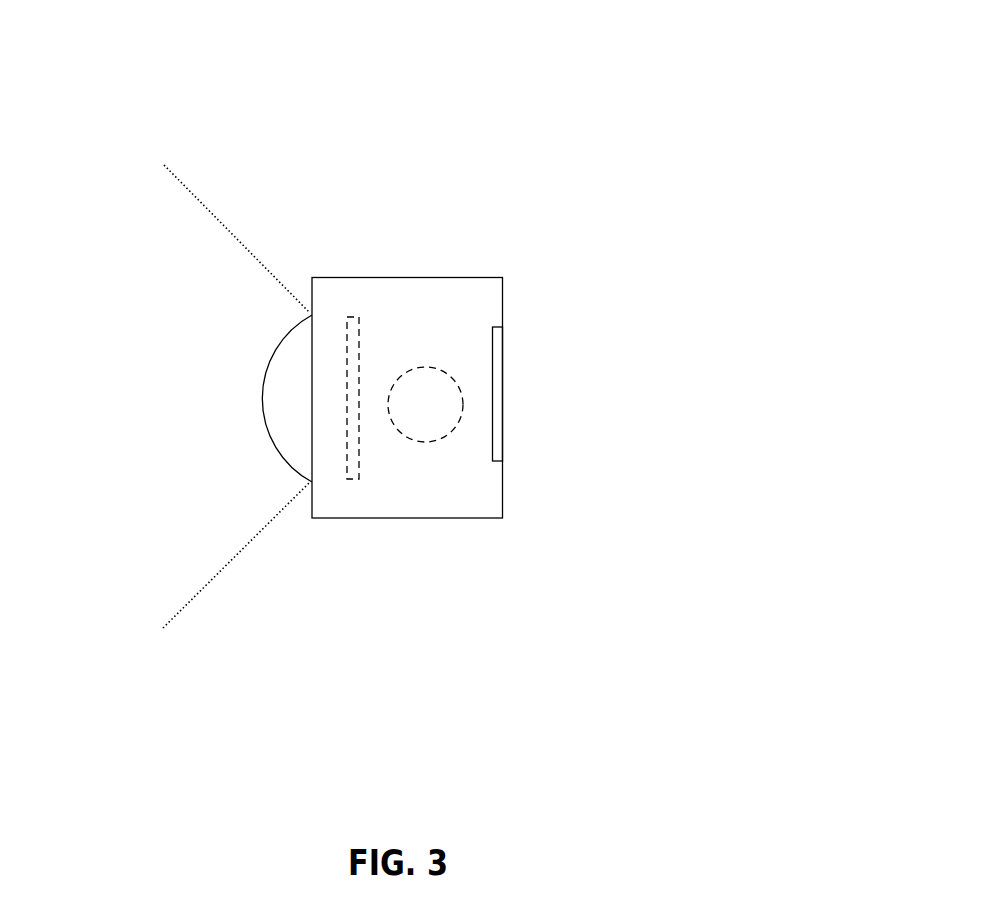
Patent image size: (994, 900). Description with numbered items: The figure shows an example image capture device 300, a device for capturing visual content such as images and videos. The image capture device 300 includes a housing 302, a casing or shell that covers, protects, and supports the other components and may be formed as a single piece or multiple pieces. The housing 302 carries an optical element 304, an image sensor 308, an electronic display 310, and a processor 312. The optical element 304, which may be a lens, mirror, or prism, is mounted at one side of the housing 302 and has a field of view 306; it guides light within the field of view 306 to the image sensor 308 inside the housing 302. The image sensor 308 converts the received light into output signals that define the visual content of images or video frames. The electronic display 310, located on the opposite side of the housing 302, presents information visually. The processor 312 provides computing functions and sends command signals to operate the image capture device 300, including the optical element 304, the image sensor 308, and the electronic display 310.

The image capture device 300 is at (475, 389).
The housing 302 is at (330, 519).
The optical element 304 is at (287, 468).
The field of view 306 is at (240, 265).
The image sensor 308 is at (405, 228).
The electronic display 310 is at (503, 406).
The processor 312 is at (426, 442).